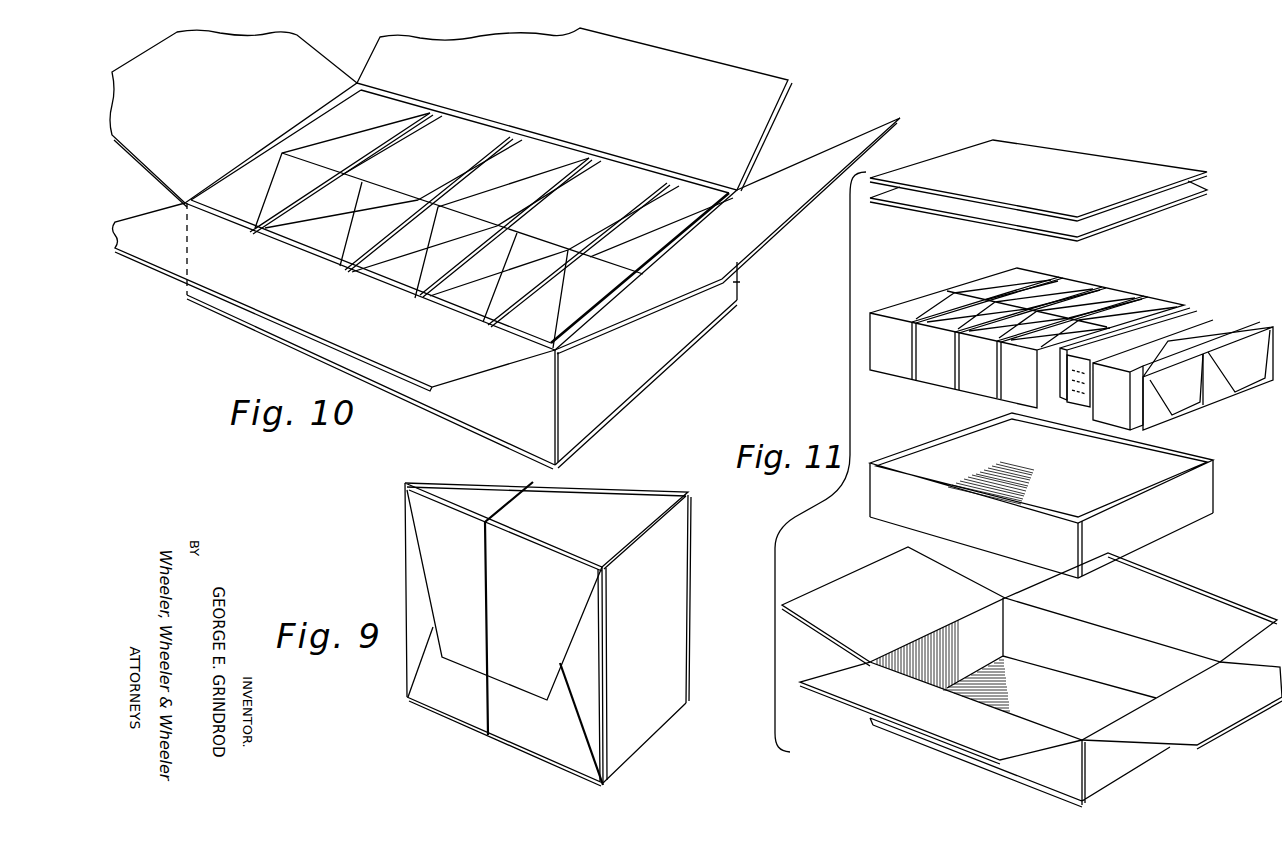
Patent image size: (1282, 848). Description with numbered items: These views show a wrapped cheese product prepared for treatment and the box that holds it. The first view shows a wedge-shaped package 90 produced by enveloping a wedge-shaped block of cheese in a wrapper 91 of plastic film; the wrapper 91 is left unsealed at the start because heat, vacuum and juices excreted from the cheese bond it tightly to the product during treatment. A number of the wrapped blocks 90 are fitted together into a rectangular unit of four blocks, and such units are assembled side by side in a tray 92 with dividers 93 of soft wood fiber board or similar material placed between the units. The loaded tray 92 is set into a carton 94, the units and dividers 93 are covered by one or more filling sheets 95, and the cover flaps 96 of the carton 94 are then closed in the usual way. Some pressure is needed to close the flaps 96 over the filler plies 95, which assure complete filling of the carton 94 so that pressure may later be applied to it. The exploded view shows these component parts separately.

In FIG. 10, the wedge-shaped package 90 is at (653, 220).
In FIG. 9, the wedge-shaped package 90 is at (548, 620).
In FIG. 11, the wedge-shaped package 90 is at (1257, 347).
In FIG. 9, the wrapper 91 is at (560, 650).
In FIG. 11, the tray 92 is at (1195, 493).
In FIG. 10, the dividers 93 is at (413, 128).
In FIG. 11, the dividers 93 is at (1068, 298).
In FIG. 10, the carton 94 is at (648, 363).
In FIG. 11, the carton 94 is at (1037, 767).
In FIG. 11, the filling sheets 95 is at (1180, 198).
In FIG. 10, the cover flaps 96 is at (782, 180).
In FIG. 11, the cover flaps 96 is at (840, 683).